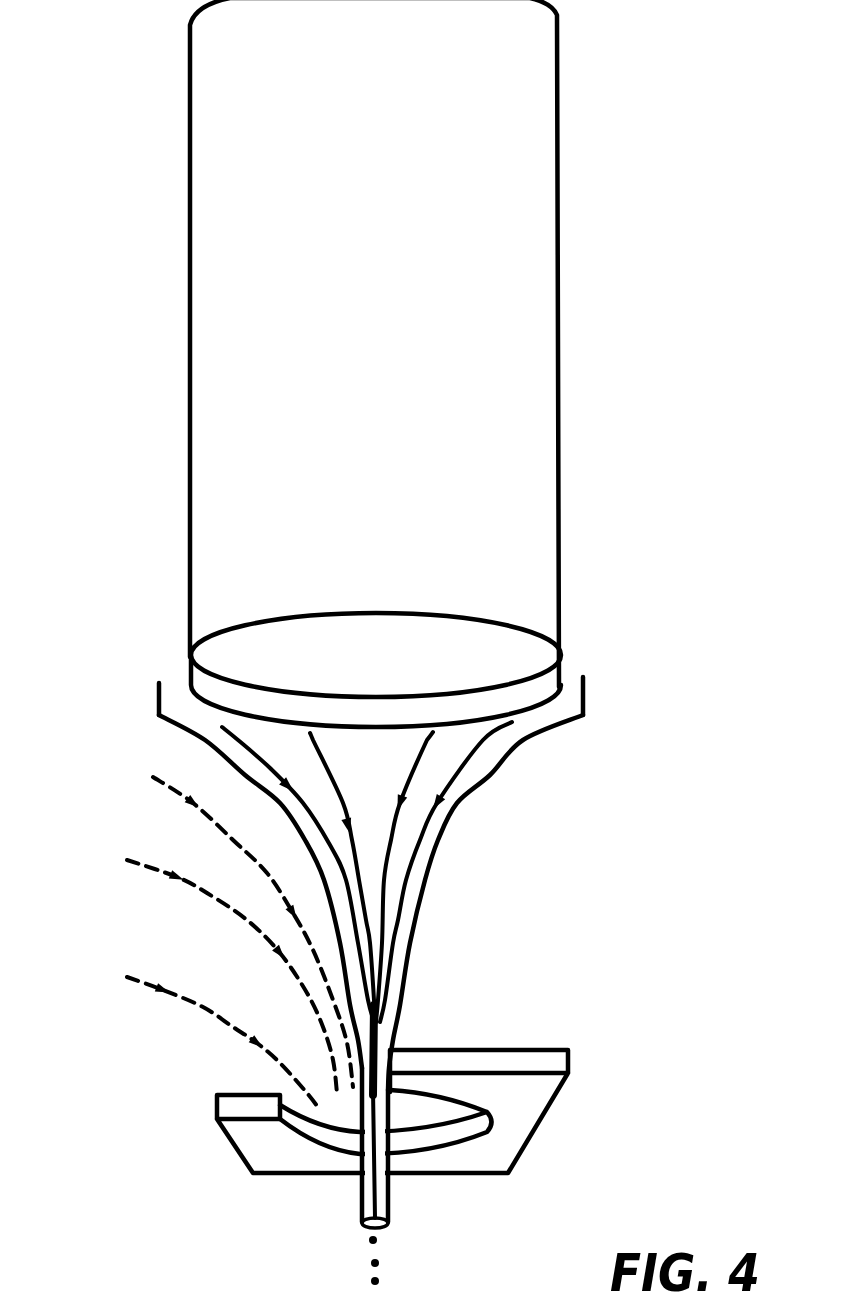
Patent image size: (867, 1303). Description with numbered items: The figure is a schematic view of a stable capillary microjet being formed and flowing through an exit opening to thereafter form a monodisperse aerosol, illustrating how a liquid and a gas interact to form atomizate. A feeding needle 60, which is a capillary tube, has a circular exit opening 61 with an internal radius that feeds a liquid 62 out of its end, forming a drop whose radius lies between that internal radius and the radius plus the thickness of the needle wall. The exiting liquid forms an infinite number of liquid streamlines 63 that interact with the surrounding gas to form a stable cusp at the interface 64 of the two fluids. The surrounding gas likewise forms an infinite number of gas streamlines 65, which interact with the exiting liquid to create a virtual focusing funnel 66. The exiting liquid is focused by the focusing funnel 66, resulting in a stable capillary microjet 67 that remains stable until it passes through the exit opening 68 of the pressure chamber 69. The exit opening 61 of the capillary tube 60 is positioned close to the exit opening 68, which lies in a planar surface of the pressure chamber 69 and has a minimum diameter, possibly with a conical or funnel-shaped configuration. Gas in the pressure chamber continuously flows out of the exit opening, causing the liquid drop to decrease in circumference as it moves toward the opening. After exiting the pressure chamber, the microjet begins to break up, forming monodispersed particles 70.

The feeding needle 60 is at (560, 446).
The circular exit opening 61 is at (520, 660).
The liquid 62 is at (350, 650).
The liquid streamlines 63 is at (397, 850).
The interface 64 is at (417, 908).
The gas streamlines 65 is at (200, 1003).
The virtual focusing funnel 66 is at (400, 1007).
The stable capillary microjet 67 is at (387, 965).
The exit opening 68 is at (460, 1107).
The pressure chamber 69 is at (535, 1048).
The monodispersed particles 70 is at (373, 1297).